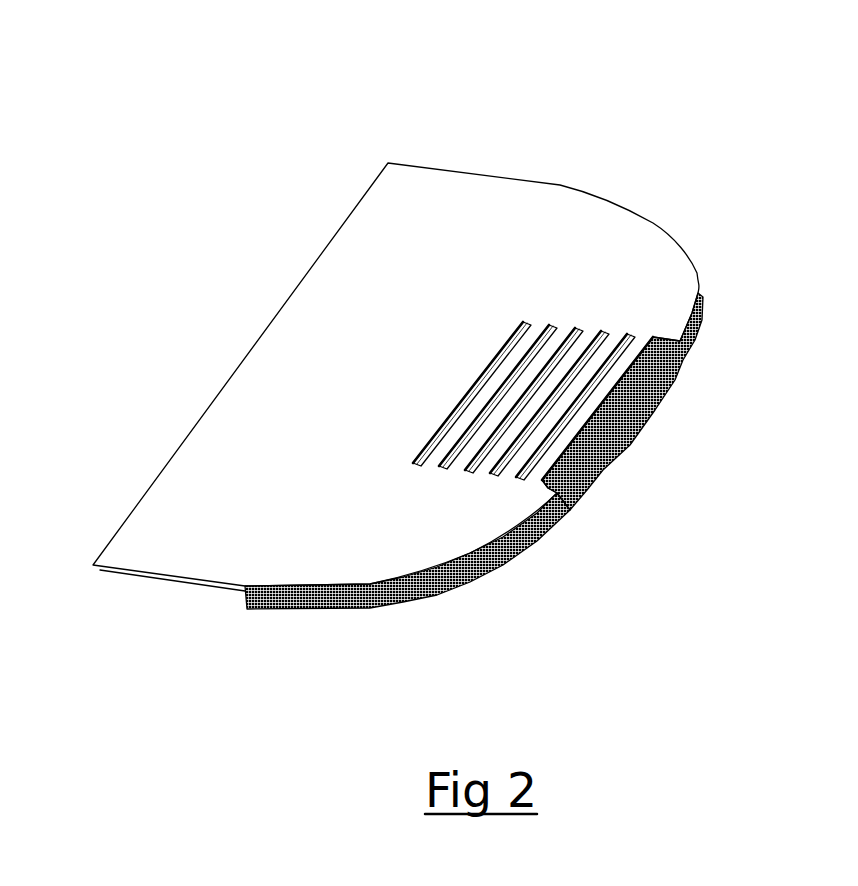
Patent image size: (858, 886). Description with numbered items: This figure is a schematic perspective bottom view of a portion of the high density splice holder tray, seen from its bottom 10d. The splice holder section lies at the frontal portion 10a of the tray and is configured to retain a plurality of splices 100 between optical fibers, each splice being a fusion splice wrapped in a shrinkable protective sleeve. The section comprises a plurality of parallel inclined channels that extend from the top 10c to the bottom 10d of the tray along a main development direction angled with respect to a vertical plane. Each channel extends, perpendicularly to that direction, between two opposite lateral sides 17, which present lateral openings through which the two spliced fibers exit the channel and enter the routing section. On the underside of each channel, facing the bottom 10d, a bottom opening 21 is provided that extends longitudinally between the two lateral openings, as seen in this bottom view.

The splices 100 is at (455, 421).
The frontal portion 10a is at (600, 476).
The top 10c is at (285, 610).
The bottom 10d is at (453, 200).
The lateral sides 17 is at (503, 371).
The bottom opening 21 is at (443, 428).